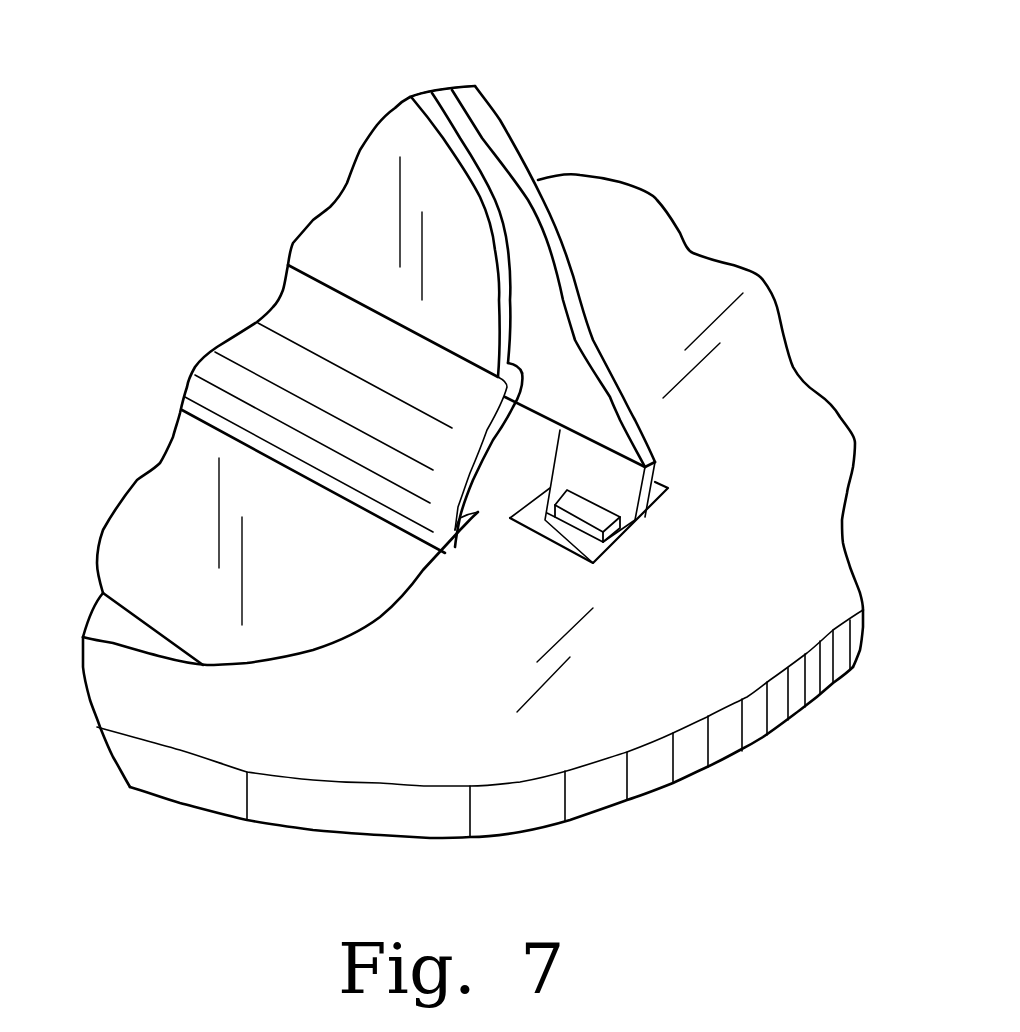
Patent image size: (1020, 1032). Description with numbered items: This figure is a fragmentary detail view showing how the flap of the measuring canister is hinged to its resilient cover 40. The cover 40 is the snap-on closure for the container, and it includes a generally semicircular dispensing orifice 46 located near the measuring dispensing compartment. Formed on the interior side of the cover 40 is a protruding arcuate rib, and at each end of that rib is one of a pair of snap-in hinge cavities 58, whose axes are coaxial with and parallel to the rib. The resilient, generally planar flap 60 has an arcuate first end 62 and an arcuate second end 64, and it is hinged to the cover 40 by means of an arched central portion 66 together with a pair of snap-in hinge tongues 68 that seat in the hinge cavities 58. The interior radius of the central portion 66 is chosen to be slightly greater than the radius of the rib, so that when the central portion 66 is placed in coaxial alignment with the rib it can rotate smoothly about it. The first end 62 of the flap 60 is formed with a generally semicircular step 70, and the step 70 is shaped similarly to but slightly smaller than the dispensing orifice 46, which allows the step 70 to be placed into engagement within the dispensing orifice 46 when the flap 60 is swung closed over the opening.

The resilient cover 40 is at (807, 512).
The dispensing orifice 46 is at (110, 620).
The snap-in hinge cavity 58 is at (578, 548).
The flap 60 is at (545, 338).
The first end 62 is at (448, 102).
The second end 64 is at (133, 532).
The central portion 66 is at (215, 368).
The snap-in hinge tongue 68 is at (618, 493).
The step 70 is at (382, 135).